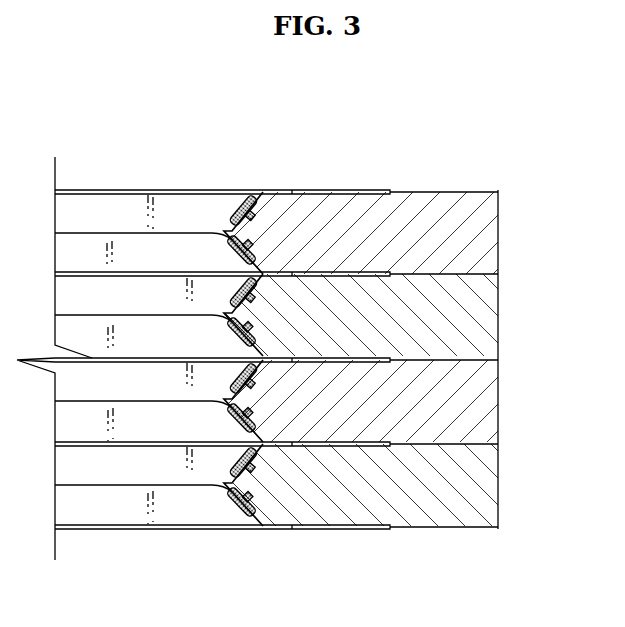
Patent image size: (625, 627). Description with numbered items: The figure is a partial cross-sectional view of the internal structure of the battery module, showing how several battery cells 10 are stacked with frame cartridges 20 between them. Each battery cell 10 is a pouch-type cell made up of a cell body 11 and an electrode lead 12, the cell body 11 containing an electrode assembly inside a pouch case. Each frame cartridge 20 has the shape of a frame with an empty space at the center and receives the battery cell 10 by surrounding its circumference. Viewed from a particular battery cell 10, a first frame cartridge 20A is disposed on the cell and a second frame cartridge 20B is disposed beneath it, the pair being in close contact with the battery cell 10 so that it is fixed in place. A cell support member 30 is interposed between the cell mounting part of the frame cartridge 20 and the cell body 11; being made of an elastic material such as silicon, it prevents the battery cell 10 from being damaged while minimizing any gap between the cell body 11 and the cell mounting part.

The battery cell 10 is at (320, 133).
The cell body 11 is at (210, 240).
The electrode lead 12 is at (315, 273).
The frame cartridge 20 is at (568, 305).
The first frame cartridge 20A is at (498, 318).
The second frame cartridge 20B is at (498, 403).
The cell support member 30 is at (238, 512).